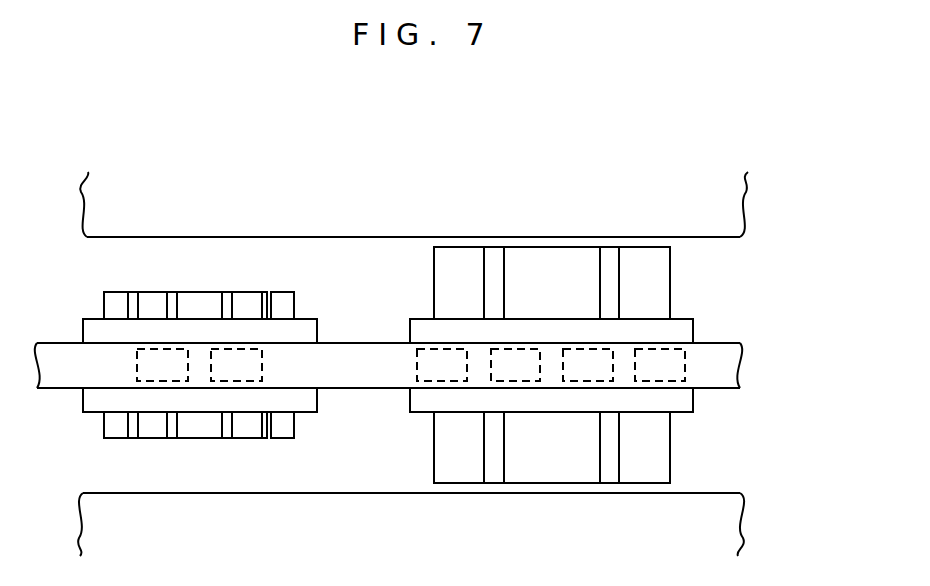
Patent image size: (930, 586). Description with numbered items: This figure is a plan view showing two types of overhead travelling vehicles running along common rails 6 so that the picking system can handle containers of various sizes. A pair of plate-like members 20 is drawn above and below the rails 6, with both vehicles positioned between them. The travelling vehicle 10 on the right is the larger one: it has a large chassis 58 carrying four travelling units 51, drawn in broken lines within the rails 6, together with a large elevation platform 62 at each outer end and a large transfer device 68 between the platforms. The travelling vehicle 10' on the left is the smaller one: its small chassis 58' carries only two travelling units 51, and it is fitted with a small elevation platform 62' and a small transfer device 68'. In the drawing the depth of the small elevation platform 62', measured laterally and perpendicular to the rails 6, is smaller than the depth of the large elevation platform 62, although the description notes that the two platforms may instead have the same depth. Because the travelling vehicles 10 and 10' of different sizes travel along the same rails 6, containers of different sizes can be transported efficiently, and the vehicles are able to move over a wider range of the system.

The plate 20 is at (733, 203).
The rails 6 is at (61, 390).
The travelling vehicle 10 is at (574, 365).
The travelling vehicle 10' is at (226, 368).
The large chassis 58 is at (574, 386).
The small chassis 58' is at (226, 378).
The large elevation platform 62 is at (556, 365).
The small elevation platform 62' is at (205, 368).
The large transfer device 68 is at (551, 365).
The small transfer device 68' is at (197, 368).
The travelling units 51 is at (137, 366).